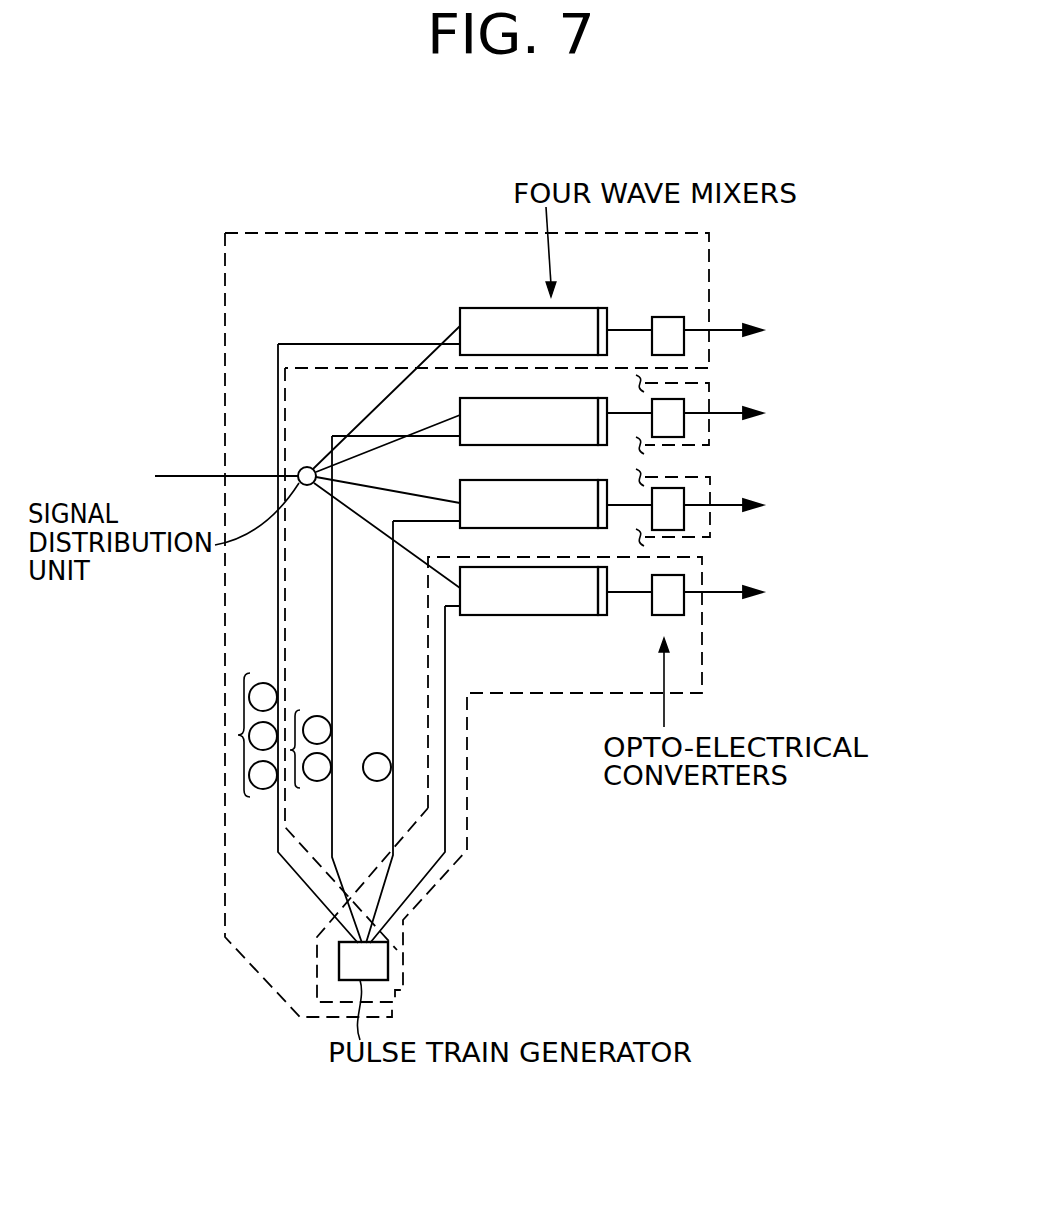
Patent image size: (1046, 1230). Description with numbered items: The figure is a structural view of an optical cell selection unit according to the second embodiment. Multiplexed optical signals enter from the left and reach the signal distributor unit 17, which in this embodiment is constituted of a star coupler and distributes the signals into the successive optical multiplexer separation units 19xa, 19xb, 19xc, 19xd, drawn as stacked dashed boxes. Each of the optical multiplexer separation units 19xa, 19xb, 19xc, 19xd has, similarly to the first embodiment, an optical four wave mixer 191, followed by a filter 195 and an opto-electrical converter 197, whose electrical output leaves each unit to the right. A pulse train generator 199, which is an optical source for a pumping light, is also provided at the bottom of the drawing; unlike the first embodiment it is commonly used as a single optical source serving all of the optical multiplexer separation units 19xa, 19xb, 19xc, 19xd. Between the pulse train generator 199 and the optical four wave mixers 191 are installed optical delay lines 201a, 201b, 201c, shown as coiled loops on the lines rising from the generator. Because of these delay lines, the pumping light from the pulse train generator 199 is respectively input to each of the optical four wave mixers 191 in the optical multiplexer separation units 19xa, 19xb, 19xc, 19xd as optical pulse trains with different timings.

The signal distributor unit 17 is at (306, 466).
The optical four wave mixer 191 is at (518, 308).
The filter 195 is at (602, 308).
The opto-electrical converter 197 is at (671, 317).
The pulse train generator 199 is at (388, 960).
The optical delay line 201a is at (238, 735).
The optical delay line 201b is at (290, 755).
The optical delay line 201c is at (367, 781).
The optical multiplexer separation unit 19xa is at (709, 291).
The optical multiplexer separation unit 19xb is at (709, 394).
The optical multiplexer separation unit 19xc is at (709, 478).
The optical multiplexer separation unit 19xd is at (702, 564).